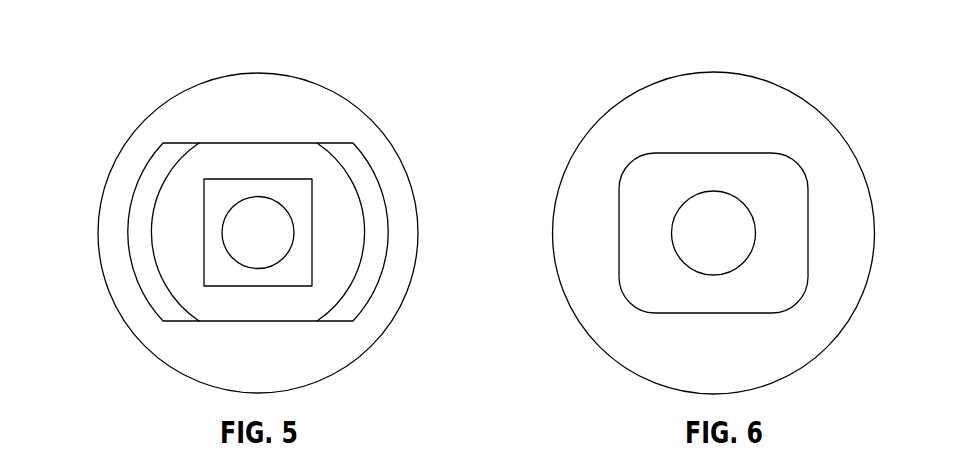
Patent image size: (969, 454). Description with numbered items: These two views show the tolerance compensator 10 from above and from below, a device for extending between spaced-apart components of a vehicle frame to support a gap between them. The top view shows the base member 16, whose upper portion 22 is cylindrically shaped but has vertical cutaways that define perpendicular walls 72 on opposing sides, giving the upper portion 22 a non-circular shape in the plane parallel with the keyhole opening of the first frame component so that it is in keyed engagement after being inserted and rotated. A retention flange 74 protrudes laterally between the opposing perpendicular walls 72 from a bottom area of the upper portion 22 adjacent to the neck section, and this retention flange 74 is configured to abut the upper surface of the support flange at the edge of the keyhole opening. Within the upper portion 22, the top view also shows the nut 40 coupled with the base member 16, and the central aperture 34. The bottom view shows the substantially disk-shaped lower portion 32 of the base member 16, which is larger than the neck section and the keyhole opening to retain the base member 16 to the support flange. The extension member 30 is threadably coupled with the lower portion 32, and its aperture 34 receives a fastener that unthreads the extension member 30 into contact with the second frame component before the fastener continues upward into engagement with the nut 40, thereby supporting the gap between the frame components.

In FIG. 5, the tolerance compensator 10 is at (117, 90).
In FIG. 6, the tolerance compensator 10 is at (573, 91).
In FIG. 5, the base member 16 is at (114, 284).
In FIG. 6, the base member 16 is at (590, 261).
In FIG. 5, the upper portion 22 is at (303, 162).
In FIG. 6, the extension member 30 is at (784, 181).
In FIG. 5, the lower portion 32 is at (230, 102).
In FIG. 5, the aperture 34 is at (268, 225).
In FIG. 6, the aperture 34 is at (707, 217).
In FIG. 5, the nut 40 is at (213, 202).
In FIG. 5, the perpendicular walls 72 is at (272, 143).
In FIG. 5, the retention flange 74 is at (142, 222).